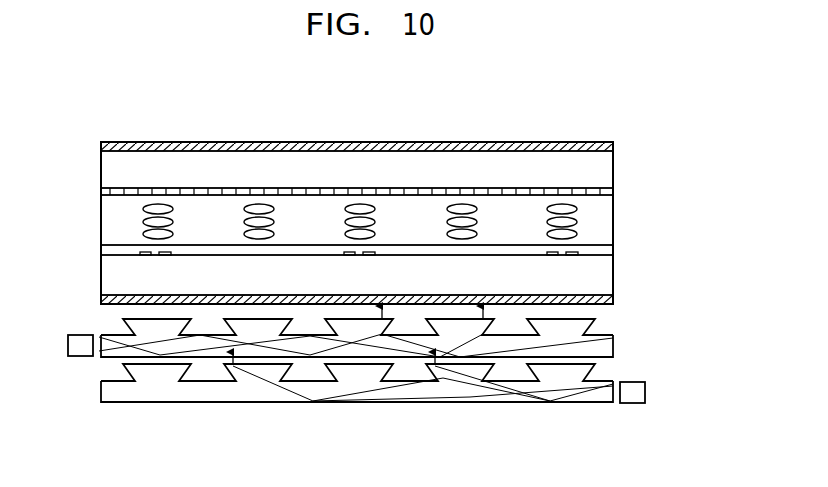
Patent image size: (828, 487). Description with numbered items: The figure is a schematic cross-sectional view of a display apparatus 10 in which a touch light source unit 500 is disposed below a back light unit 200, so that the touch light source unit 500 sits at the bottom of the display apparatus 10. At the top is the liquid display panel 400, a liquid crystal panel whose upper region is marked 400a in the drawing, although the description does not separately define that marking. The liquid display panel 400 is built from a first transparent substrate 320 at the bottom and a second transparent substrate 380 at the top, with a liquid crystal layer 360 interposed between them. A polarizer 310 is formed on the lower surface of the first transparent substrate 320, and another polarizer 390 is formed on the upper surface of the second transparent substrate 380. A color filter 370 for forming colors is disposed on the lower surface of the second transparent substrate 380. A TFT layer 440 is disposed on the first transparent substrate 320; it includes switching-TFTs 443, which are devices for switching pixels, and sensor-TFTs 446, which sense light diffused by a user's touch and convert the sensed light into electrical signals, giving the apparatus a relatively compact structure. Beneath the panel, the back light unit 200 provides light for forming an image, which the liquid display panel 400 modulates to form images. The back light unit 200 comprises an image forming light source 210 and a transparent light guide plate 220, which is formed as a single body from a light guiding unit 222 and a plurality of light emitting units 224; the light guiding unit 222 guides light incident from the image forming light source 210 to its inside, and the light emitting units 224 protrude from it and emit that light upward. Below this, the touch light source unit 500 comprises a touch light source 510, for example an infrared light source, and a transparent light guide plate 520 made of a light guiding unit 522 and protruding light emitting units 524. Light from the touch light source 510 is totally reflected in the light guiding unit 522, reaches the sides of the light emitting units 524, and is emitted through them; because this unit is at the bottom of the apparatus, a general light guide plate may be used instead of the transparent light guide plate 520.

The display apparatus 10 is at (110, 112).
The liquid display panel 400 is at (92, 142).
The display surface of display panel 400a is at (553, 140).
The polarizer 390 is at (613, 148).
The second transparent substrate 380 is at (613, 173).
The color filter 370 is at (613, 192).
The liquid crystal layer 360 is at (613, 225).
The TFT layer 440 is at (613, 253).
The switching-TFTs 443 is at (143, 256).
The sensor-TFTs 446 is at (166, 256).
The first transparent substrate 320 is at (613, 280).
The polarizer 310 is at (613, 300).
The back light unit 200 is at (63, 317).
The image forming light source 210 is at (80, 333).
The transparent light guide plate 220 is at (667, 318).
The light guiding unit 222 is at (613, 349).
The light emitting units 224 is at (590, 321).
The touch light source unit 500 is at (92, 363).
The touch light source 510 is at (645, 392).
The transparent light guide plate 520 is at (603, 441).
The light guiding unit 522 is at (601, 396).
The light emitting units 524 is at (555, 370).